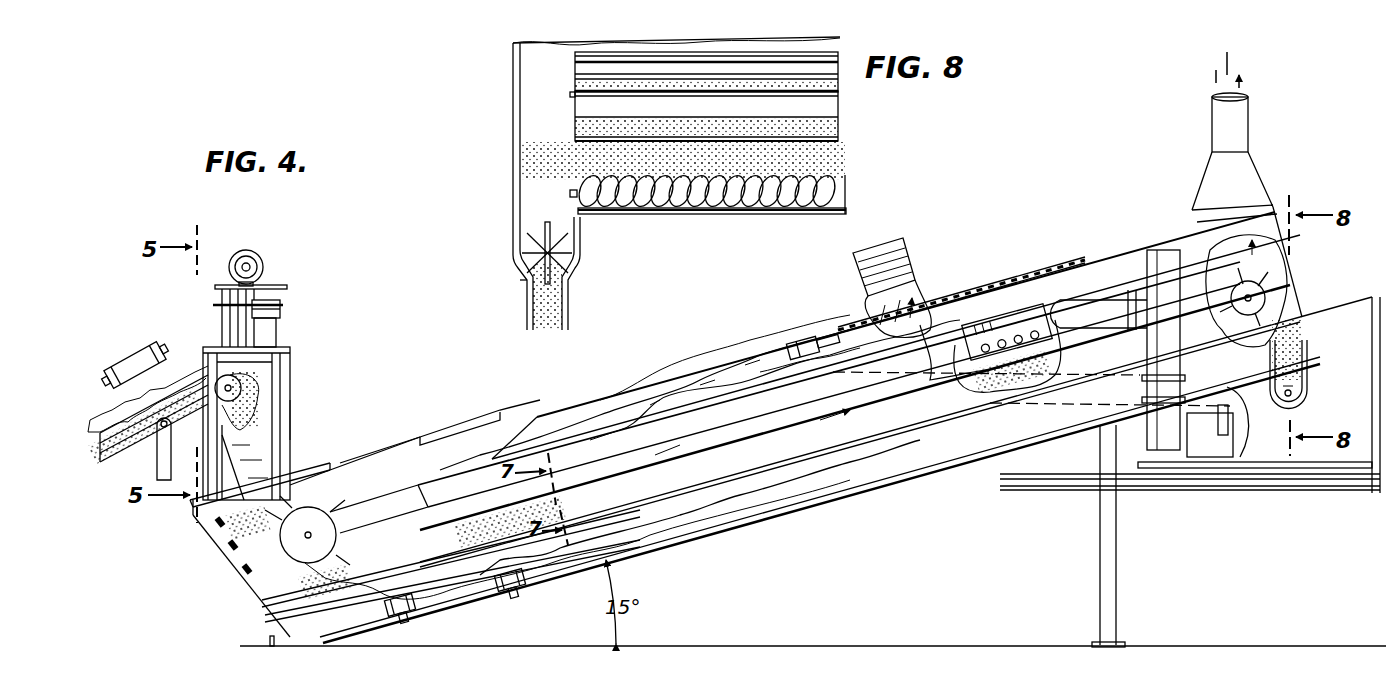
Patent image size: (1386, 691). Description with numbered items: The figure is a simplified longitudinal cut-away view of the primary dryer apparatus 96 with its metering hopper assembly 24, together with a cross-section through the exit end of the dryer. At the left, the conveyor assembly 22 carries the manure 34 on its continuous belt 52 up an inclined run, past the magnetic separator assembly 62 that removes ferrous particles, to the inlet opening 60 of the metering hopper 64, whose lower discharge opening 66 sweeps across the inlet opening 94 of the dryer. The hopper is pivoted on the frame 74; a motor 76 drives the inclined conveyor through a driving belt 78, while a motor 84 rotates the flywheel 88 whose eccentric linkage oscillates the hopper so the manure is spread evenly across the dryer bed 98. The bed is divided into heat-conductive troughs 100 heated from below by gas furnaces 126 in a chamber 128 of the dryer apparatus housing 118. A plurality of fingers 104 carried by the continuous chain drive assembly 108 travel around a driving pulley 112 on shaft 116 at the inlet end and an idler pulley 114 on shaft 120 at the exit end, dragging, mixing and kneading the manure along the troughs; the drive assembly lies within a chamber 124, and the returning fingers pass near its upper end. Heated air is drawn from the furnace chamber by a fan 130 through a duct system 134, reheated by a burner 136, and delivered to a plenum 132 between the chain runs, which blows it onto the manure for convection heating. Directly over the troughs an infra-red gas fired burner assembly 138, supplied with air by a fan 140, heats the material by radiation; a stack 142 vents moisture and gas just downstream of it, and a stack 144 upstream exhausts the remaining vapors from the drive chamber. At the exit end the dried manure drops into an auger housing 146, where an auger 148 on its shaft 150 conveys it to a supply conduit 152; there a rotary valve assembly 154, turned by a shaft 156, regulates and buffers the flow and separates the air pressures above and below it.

In FIG. 4, the conveyor assembly 22 is at (97, 405).
In FIG. 4, the metering hopper assembly 24 is at (293, 406).
In FIG. 8, the manure 34 is at (825, 164).
In FIG. 4, the continuous belt 52 is at (200, 460).
In FIG. 4, the inlet opening 60 is at (257, 428).
In FIG. 4, the magnetic separator assembly 62 is at (130, 348).
In FIG. 4, the metering hopper 64 is at (262, 383).
In FIG. 4, the lower discharge opening 66 is at (310, 505).
In FIG. 4, the frame 74 is at (283, 356).
In FIG. 4, the motor 76 is at (250, 252).
In FIG. 4, the driving belt 78 is at (262, 289).
In FIG. 4, the motor 84 is at (281, 307).
In FIG. 4, the flywheel 88 is at (213, 305).
In FIG. 4, the inlet opening 94 is at (235, 525).
In FIG. 4, the primary dryer apparatus 96 is at (700, 345).
In FIG. 4, the dryer bed 98 is at (410, 565).
In FIG. 8, the dryer bed 98 is at (810, 126).
In FIG. 4, the troughs 100 is at (330, 560).
In FIG. 8, the troughs 100 is at (600, 108).
In FIG. 4, the fingers 104 is at (330, 500).
In FIG. 8, the fingers 104 is at (592, 70).
In FIG. 4, the continuous chain drive assembly 108 is at (370, 500).
In FIG. 4, the driving pulley 112 is at (285, 556).
In FIG. 4, the idler pulley 114 is at (1268, 258).
In FIG. 4, the shaft 116 is at (306, 540).
In FIG. 4, the dryer apparatus housing 118 is at (1135, 245).
In FIG. 4, the shaft 120 is at (1222, 255).
In FIG. 4, the chamber 124 is at (962, 305).
In FIG. 4, the gas furnaces 126 is at (405, 615).
In FIG. 4, the chamber 128 is at (450, 590).
In FIG. 4, the fan 130 is at (1235, 445).
In FIG. 4, the plenum 132 is at (525, 460).
In FIG. 4, the duct system 134 is at (660, 380).
In FIG. 4, the burner 136 is at (792, 340).
In FIG. 4, the infra-red gas fired burner assembly 138 is at (1010, 320).
In FIG. 4, the fan 140 is at (1163, 455).
In FIG. 4, the stack 142 is at (875, 250).
In FIG. 4, the stack 144 is at (1250, 120).
In FIG. 4, the auger housing 146 is at (1300, 405).
In FIG. 8, the auger housing 146 is at (605, 215).
In FIG. 8, the auger 148 is at (705, 213).
In FIG. 4, the shaft 150 is at (1303, 388).
In FIG. 8, the shaft 150 is at (570, 193).
In FIG. 8, the supply conduit 152 is at (515, 218).
In FIG. 8, the rotary valve assembly 154 is at (570, 258).
In FIG. 8, the shaft 156 is at (528, 258).